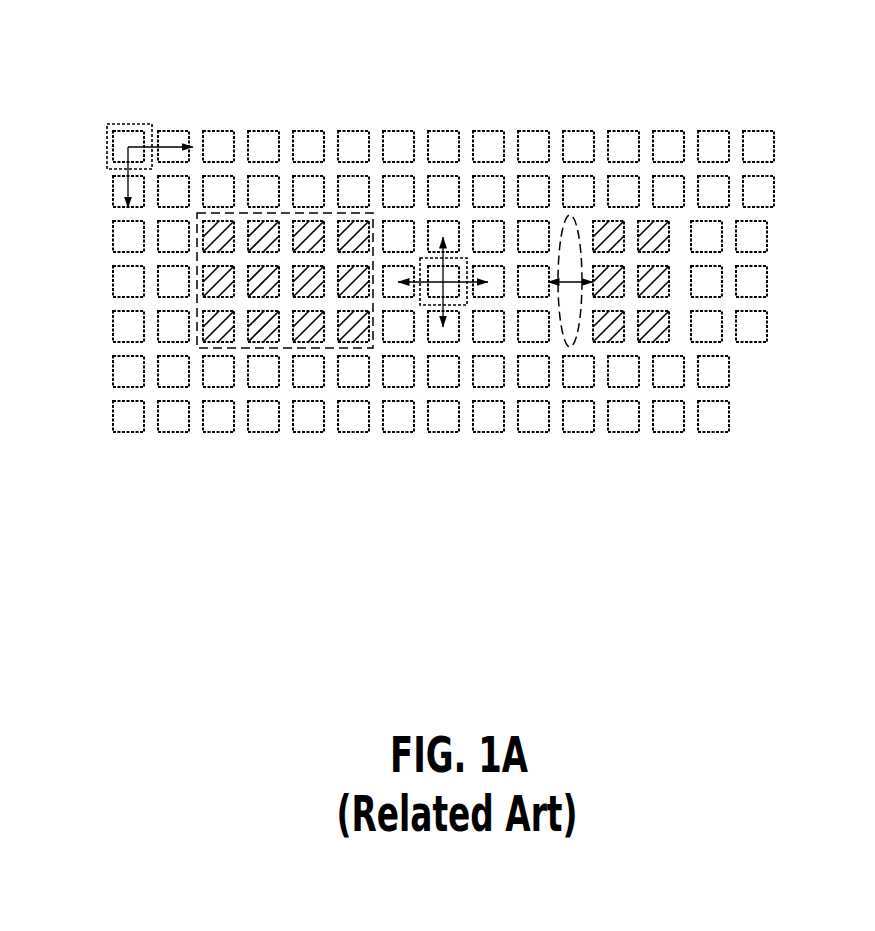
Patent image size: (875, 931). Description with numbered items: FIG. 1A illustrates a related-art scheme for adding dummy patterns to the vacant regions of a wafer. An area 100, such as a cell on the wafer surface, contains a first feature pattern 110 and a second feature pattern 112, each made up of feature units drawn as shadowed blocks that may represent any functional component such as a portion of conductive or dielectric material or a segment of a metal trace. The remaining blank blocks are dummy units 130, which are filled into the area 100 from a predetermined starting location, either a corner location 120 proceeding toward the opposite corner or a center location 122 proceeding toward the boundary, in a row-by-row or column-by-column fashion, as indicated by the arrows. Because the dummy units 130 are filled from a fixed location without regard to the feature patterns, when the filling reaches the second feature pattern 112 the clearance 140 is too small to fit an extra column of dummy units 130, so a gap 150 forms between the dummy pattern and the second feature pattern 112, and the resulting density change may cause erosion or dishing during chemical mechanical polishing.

The area 100 is at (454, 304).
The first feature pattern 110 is at (198, 347).
The second feature pattern 112 is at (675, 343).
The corner location 120 is at (125, 120).
The center location 122 is at (427, 306).
The dummy units 130 is at (530, 132).
The clearance 140 is at (568, 284).
The gap 150 is at (577, 222).